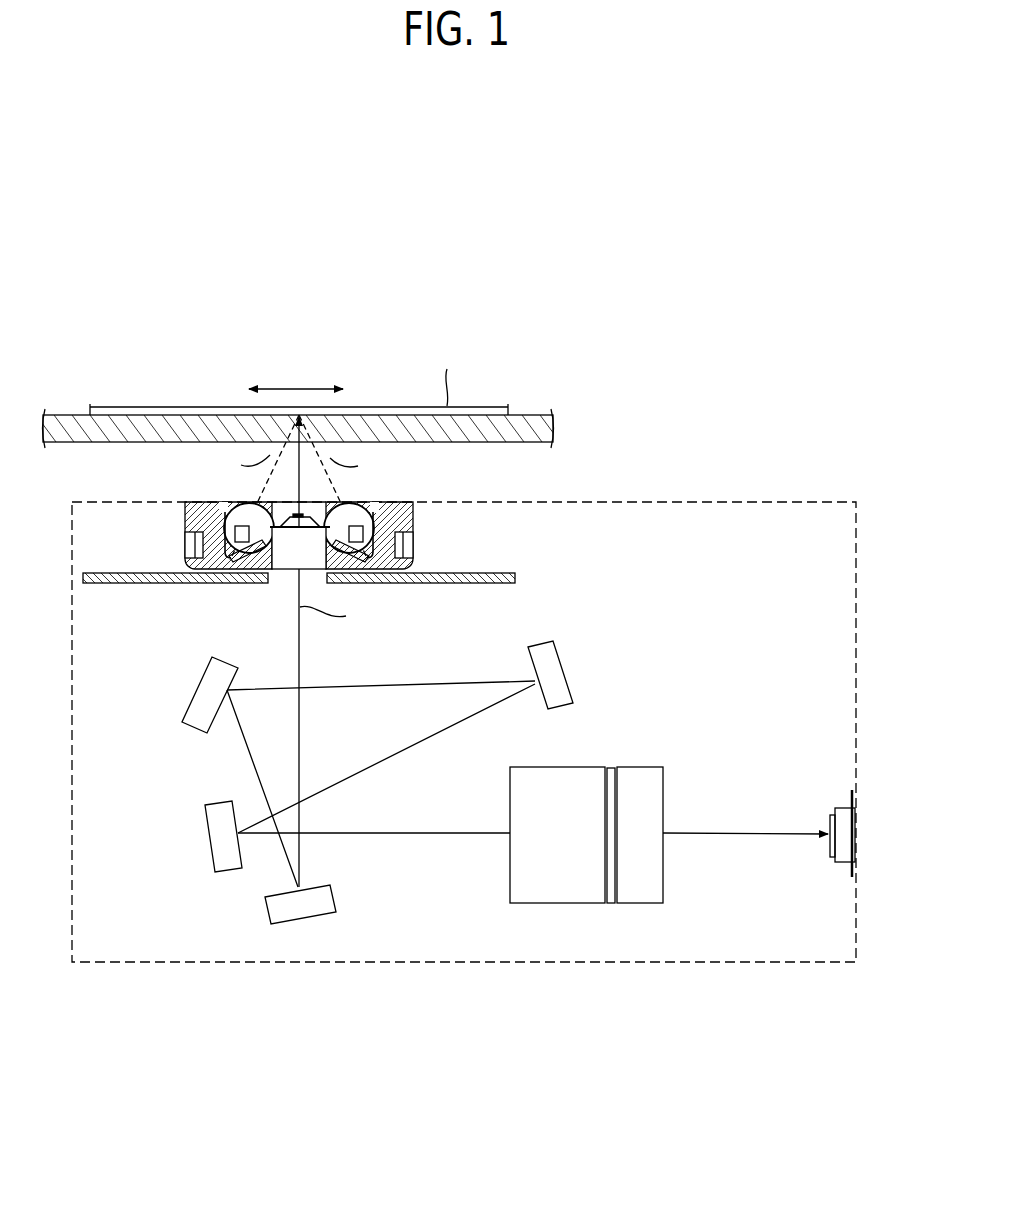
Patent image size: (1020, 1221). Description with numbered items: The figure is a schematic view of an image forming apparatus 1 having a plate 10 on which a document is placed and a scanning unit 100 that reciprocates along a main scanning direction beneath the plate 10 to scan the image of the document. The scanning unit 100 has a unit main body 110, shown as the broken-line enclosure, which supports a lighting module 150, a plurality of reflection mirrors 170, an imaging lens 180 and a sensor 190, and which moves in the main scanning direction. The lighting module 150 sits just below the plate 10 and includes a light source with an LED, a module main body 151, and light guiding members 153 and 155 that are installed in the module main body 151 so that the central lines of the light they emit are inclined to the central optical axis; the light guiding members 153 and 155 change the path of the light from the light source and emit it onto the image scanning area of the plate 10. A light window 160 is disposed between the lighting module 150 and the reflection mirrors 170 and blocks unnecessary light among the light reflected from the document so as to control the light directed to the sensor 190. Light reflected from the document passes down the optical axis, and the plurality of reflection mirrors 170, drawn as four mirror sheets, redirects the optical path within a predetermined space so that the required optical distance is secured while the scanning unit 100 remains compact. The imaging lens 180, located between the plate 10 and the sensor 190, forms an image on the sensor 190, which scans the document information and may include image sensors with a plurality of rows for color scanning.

The image forming apparatus 1 is at (637, 320).
The plate 10 is at (527, 433).
The scanning unit 100 is at (733, 498).
The unit main body 110 is at (148, 962).
The lighting module 150 is at (422, 537).
The module main body 151 is at (417, 562).
The light guiding member 153 is at (362, 520).
The light guiding member 155 is at (235, 520).
The light window 160 is at (515, 577).
The reflection mirror 170 is at (185, 690).
The imaging lens 180 is at (642, 777).
The sensor 190 is at (841, 815).